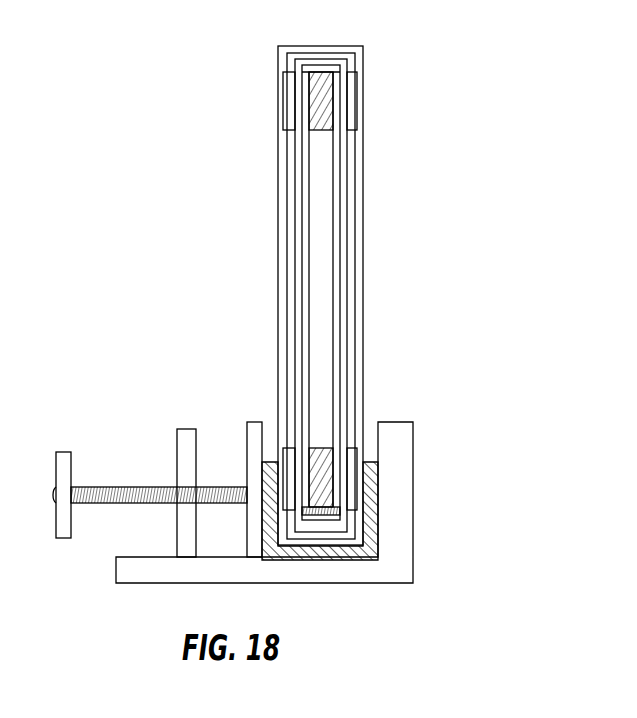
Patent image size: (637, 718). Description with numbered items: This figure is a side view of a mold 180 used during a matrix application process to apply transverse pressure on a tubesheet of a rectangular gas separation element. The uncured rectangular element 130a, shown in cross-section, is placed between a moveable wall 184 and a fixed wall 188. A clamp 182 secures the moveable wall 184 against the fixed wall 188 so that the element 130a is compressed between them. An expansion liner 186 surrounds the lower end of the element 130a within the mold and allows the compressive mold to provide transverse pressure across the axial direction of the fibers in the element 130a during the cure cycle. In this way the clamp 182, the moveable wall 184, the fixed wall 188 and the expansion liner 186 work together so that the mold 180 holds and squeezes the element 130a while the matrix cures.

The mold 180 is at (175, 152).
The gas separation element 130a is at (373, 68).
The clamp 182 is at (105, 485).
The moveable wall 184 is at (247, 438).
The expansion liner 186 is at (378, 483).
The fixed wall 188 is at (393, 515).